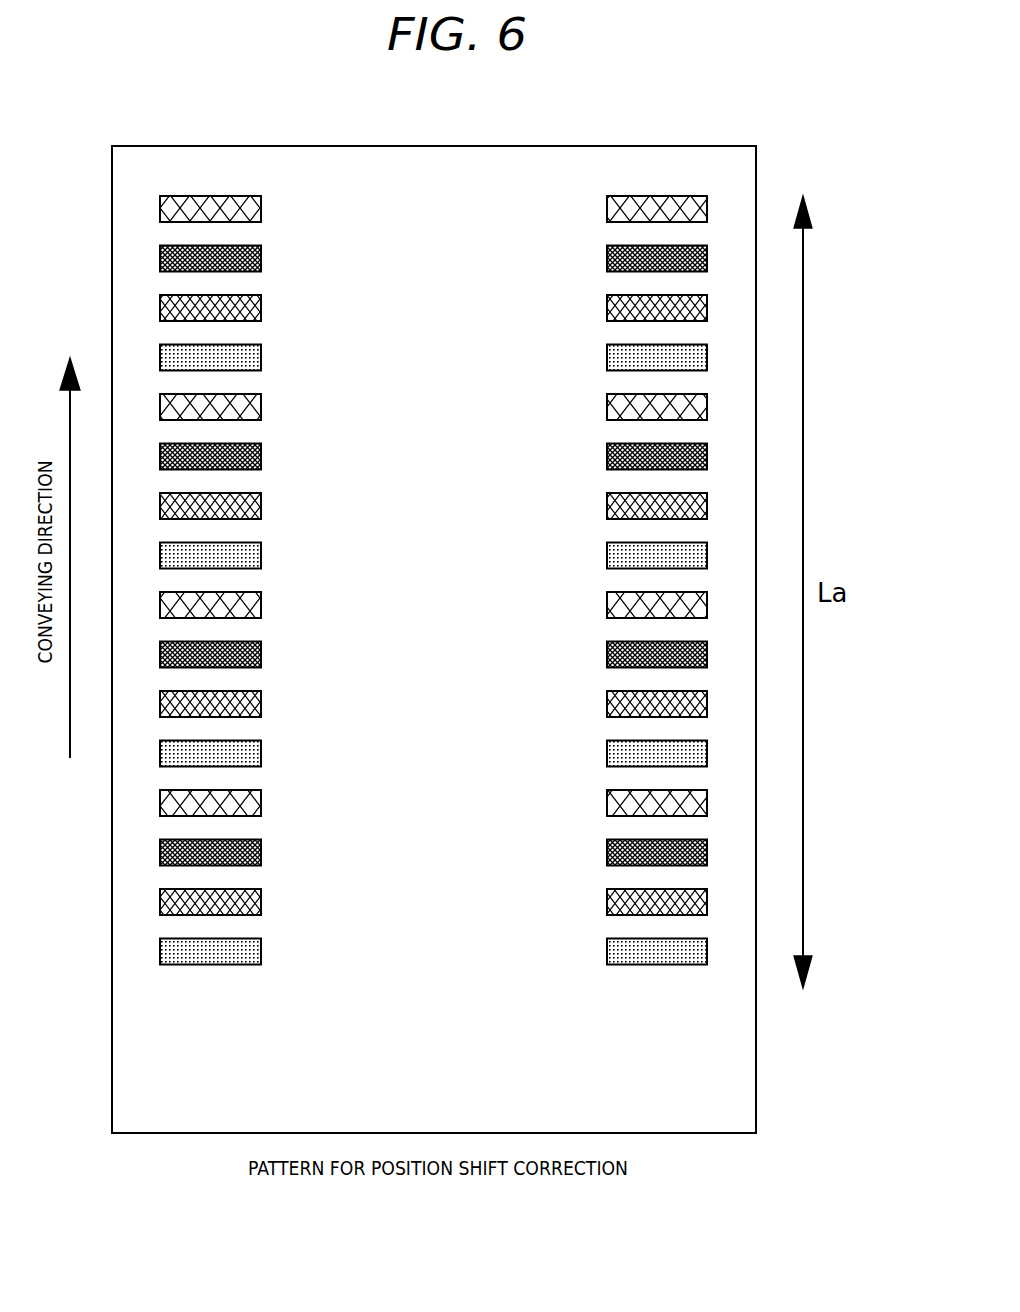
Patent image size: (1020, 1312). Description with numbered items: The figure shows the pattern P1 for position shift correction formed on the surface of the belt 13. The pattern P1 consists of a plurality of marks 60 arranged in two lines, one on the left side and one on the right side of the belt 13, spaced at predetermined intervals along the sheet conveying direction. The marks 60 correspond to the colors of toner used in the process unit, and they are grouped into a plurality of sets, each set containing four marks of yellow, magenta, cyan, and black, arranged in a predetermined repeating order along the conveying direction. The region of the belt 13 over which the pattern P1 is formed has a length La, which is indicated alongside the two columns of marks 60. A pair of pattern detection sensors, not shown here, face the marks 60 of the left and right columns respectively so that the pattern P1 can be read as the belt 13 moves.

The marks 60 is at (261, 209).
The pattern for position shift correction P1 is at (364, 168).
The belt 13 is at (505, 146).